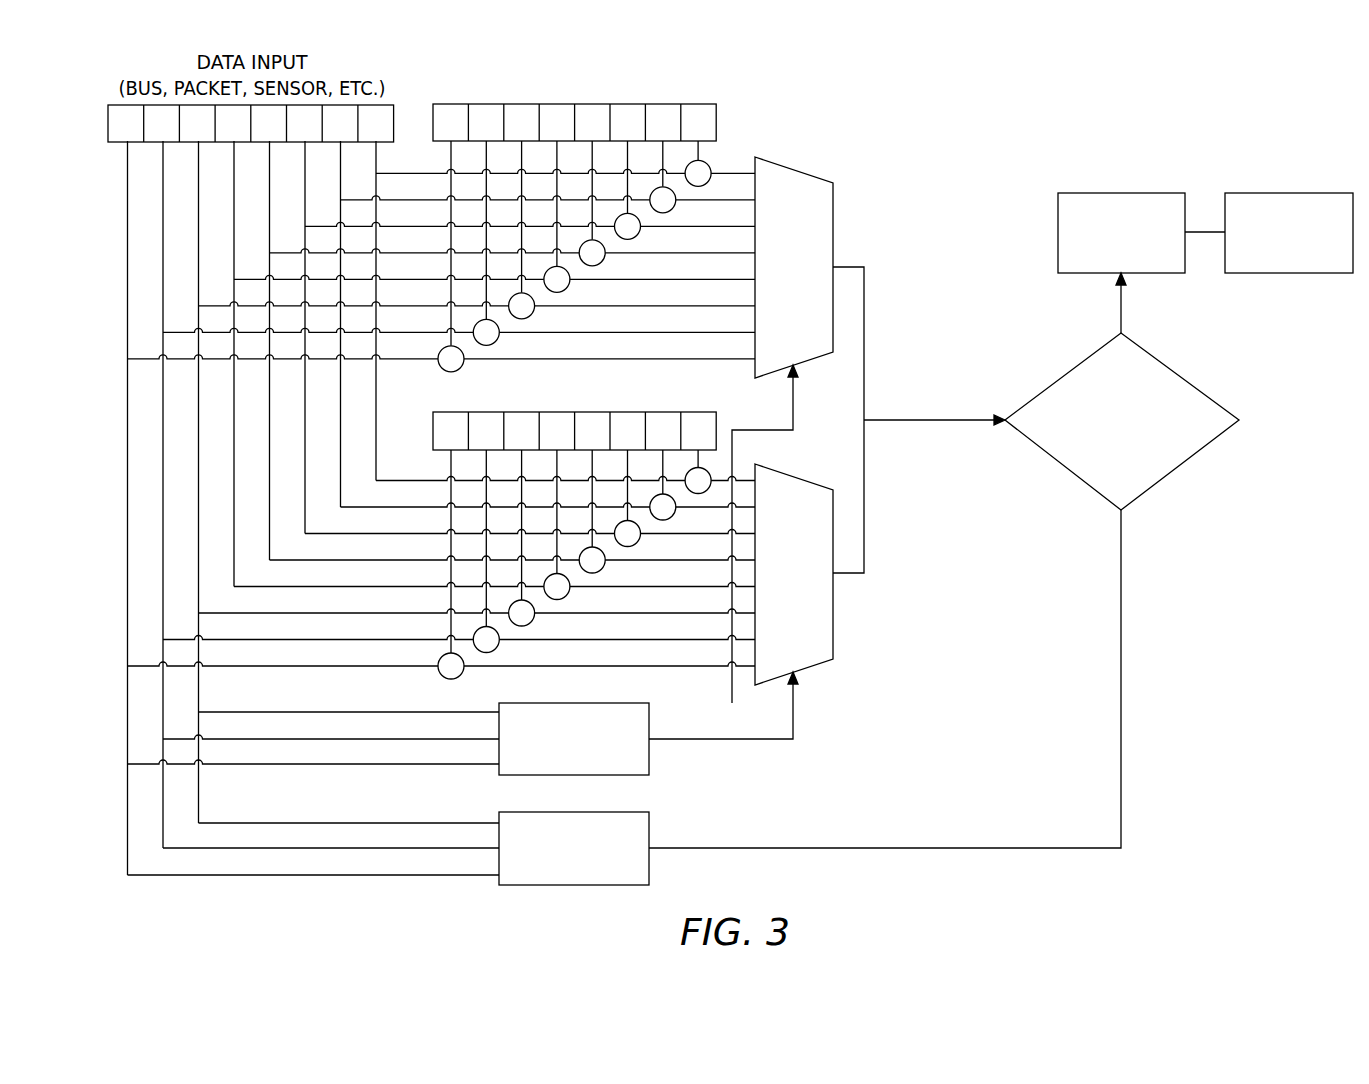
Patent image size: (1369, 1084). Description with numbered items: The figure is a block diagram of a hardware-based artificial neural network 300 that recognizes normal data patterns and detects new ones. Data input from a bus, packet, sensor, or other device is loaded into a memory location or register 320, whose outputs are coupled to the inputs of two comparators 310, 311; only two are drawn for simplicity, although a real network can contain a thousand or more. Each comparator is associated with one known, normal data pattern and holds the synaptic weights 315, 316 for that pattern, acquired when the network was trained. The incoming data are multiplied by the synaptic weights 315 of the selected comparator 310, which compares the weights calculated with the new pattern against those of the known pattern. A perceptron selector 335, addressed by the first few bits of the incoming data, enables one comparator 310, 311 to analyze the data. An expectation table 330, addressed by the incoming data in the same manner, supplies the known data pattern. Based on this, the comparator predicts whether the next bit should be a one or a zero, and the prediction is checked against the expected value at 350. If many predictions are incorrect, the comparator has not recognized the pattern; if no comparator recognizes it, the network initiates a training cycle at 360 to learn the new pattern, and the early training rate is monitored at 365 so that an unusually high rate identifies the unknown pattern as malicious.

The hardware-based artificial neural network 300 is at (1266, 82).
The comparator 310 is at (793, 166).
The comparator 311 is at (793, 473).
The synaptic weights 315 is at (665, 104).
The synaptic weights 316 is at (665, 411).
The memory location or register 320 is at (108, 122).
The expectation table 330 is at (577, 808).
The perceptron selector 335 is at (577, 698).
The prediction comparison 350 is at (1182, 373).
The training cycle initiation 360 is at (1120, 193).
The early training rate monitor 365 is at (1290, 193).